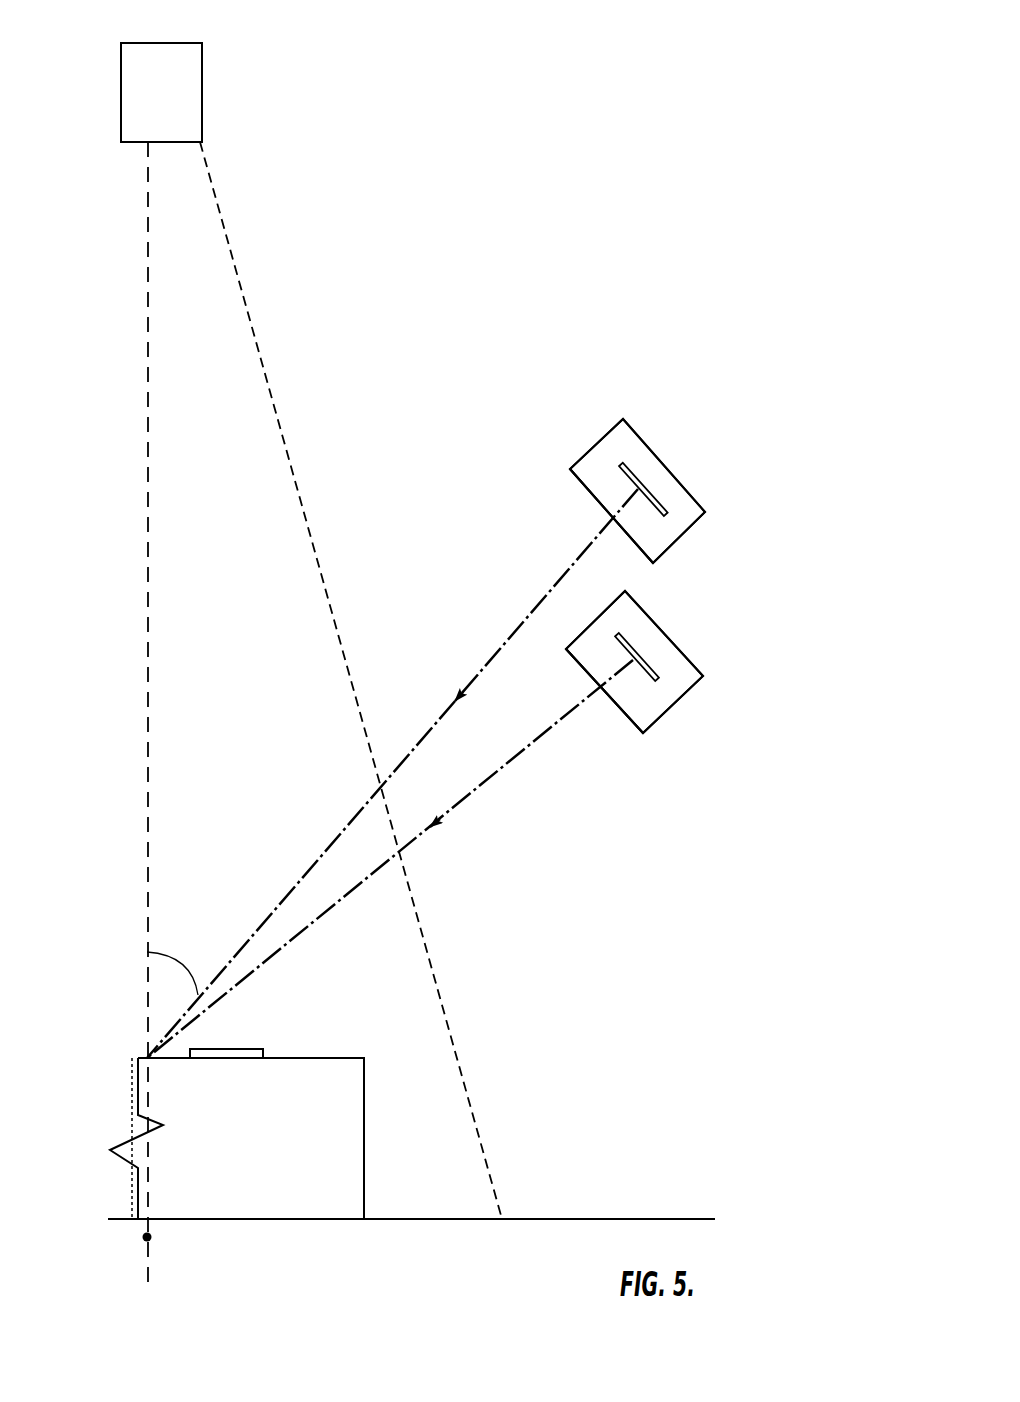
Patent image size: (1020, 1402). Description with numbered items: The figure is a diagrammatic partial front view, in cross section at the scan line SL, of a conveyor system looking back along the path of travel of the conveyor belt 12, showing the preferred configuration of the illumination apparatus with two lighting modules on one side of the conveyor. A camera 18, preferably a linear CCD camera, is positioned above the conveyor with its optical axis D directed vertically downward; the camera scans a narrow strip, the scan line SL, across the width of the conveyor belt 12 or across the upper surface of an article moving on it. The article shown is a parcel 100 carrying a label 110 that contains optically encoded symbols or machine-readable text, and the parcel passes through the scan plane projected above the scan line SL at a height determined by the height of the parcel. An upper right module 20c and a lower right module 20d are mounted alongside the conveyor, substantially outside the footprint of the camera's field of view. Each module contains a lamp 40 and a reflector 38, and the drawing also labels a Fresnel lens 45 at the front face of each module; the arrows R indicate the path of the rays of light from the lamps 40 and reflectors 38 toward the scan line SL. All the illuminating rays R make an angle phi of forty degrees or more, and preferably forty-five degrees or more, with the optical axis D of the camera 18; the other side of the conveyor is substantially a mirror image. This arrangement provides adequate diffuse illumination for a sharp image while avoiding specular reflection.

The conveyor belt 12 is at (432, 1221).
The camera 18 is at (202, 80).
The upper right module 20c is at (677, 466).
The lower right module 20d is at (664, 621).
The reflector 38 is at (692, 495).
The lamp 40 is at (630, 466).
The Fresnel lens 45 is at (587, 478).
The parcel 100 is at (323, 1212).
The label 110 is at (210, 1059).
The rays of light R is at (492, 662).
The optical axis D is at (308, 722).
The scan line SL is at (128, 1127).
The angle phi is at (172, 972).